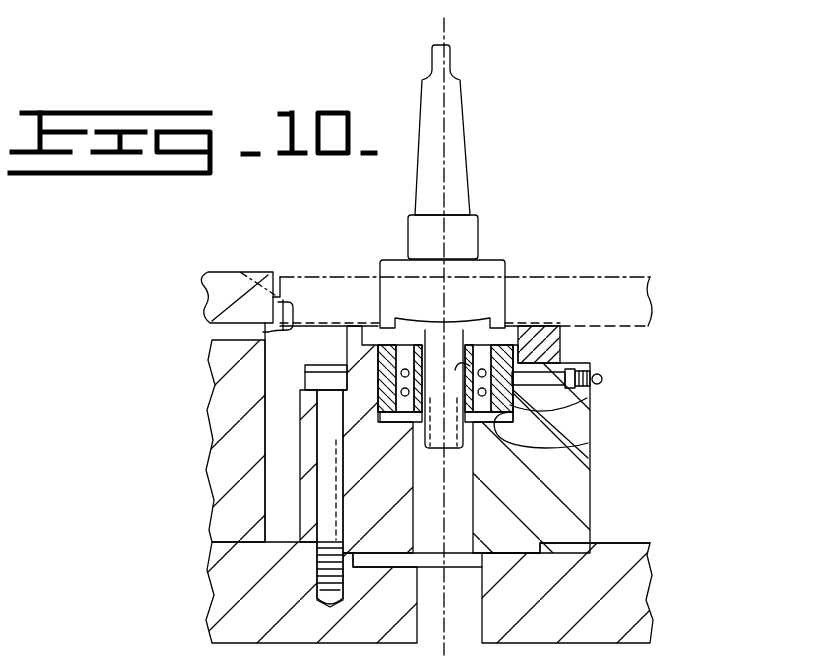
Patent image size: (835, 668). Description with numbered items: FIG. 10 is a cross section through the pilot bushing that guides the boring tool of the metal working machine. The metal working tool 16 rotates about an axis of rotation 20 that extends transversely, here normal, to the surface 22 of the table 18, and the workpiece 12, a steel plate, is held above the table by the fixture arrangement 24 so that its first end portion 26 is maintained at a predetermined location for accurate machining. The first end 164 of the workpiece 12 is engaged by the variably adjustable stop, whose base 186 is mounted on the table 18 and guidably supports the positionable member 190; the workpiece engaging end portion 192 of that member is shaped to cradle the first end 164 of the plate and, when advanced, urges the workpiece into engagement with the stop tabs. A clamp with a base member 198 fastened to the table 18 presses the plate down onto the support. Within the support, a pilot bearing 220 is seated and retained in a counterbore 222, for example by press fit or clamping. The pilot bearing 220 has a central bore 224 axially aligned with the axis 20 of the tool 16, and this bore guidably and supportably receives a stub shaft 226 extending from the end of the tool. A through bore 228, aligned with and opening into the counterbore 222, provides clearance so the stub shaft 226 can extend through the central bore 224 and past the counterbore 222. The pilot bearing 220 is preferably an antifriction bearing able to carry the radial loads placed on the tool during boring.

The workpiece 12 is at (640, 277).
The metal working tool 16 is at (466, 135).
The table 18 is at (645, 578).
The axis of rotation 20 is at (446, 32).
The surface of the table 22 is at (622, 543).
The fixture arrangement 24 is at (658, 180).
The first end portion 26 is at (330, 276).
The first end 164 is at (240, 272).
The base 186 is at (232, 440).
The positionable member 190 is at (218, 300).
The workpiece engaging end portion 192 is at (215, 338).
The base member 198 is at (357, 486).
The pilot bearing 220 is at (560, 410).
The counterbore 222 is at (560, 448).
The central bore 224 is at (560, 344).
The stub shaft 226 is at (565, 490).
The through bore 228 is at (413, 507).